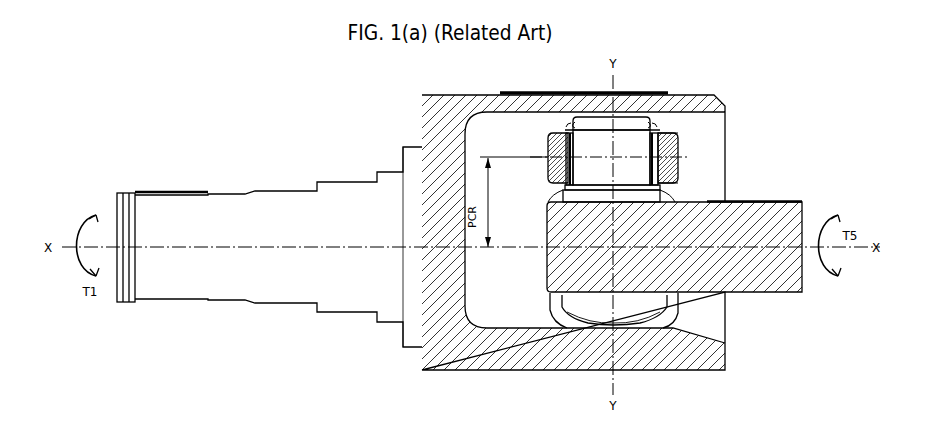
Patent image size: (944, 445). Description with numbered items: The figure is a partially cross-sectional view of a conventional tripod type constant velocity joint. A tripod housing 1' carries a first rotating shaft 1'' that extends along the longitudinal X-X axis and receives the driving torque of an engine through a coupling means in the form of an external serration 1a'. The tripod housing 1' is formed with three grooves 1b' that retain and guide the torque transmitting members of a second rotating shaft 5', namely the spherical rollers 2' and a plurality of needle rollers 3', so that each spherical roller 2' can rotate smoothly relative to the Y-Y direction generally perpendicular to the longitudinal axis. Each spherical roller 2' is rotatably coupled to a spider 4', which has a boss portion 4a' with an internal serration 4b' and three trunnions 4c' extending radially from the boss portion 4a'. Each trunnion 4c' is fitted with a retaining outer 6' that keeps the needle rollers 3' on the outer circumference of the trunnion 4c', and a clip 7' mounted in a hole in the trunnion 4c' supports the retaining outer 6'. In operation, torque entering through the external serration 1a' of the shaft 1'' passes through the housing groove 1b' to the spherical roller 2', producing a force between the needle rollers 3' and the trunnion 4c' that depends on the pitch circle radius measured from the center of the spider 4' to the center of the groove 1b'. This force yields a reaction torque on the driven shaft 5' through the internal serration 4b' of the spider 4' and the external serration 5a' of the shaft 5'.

The tripod housing 1' is at (617, 94).
The first rotating shaft 1'' is at (269, 242).
The external serration 1a' is at (165, 165).
The grooves 1b' is at (680, 157).
The spherical rollers 2' is at (575, 213).
The needle rollers 3' is at (676, 121).
The spider 4' is at (613, 119).
The boss portion 4a' is at (670, 154).
The internal serration 4b' is at (566, 78).
The trunnions 4c' is at (612, 120).
The second rotating shaft 5' is at (685, 220).
The external serration 5a' is at (657, 187).
The retaining outer 6' is at (584, 111).
The clip 7' is at (594, 120).